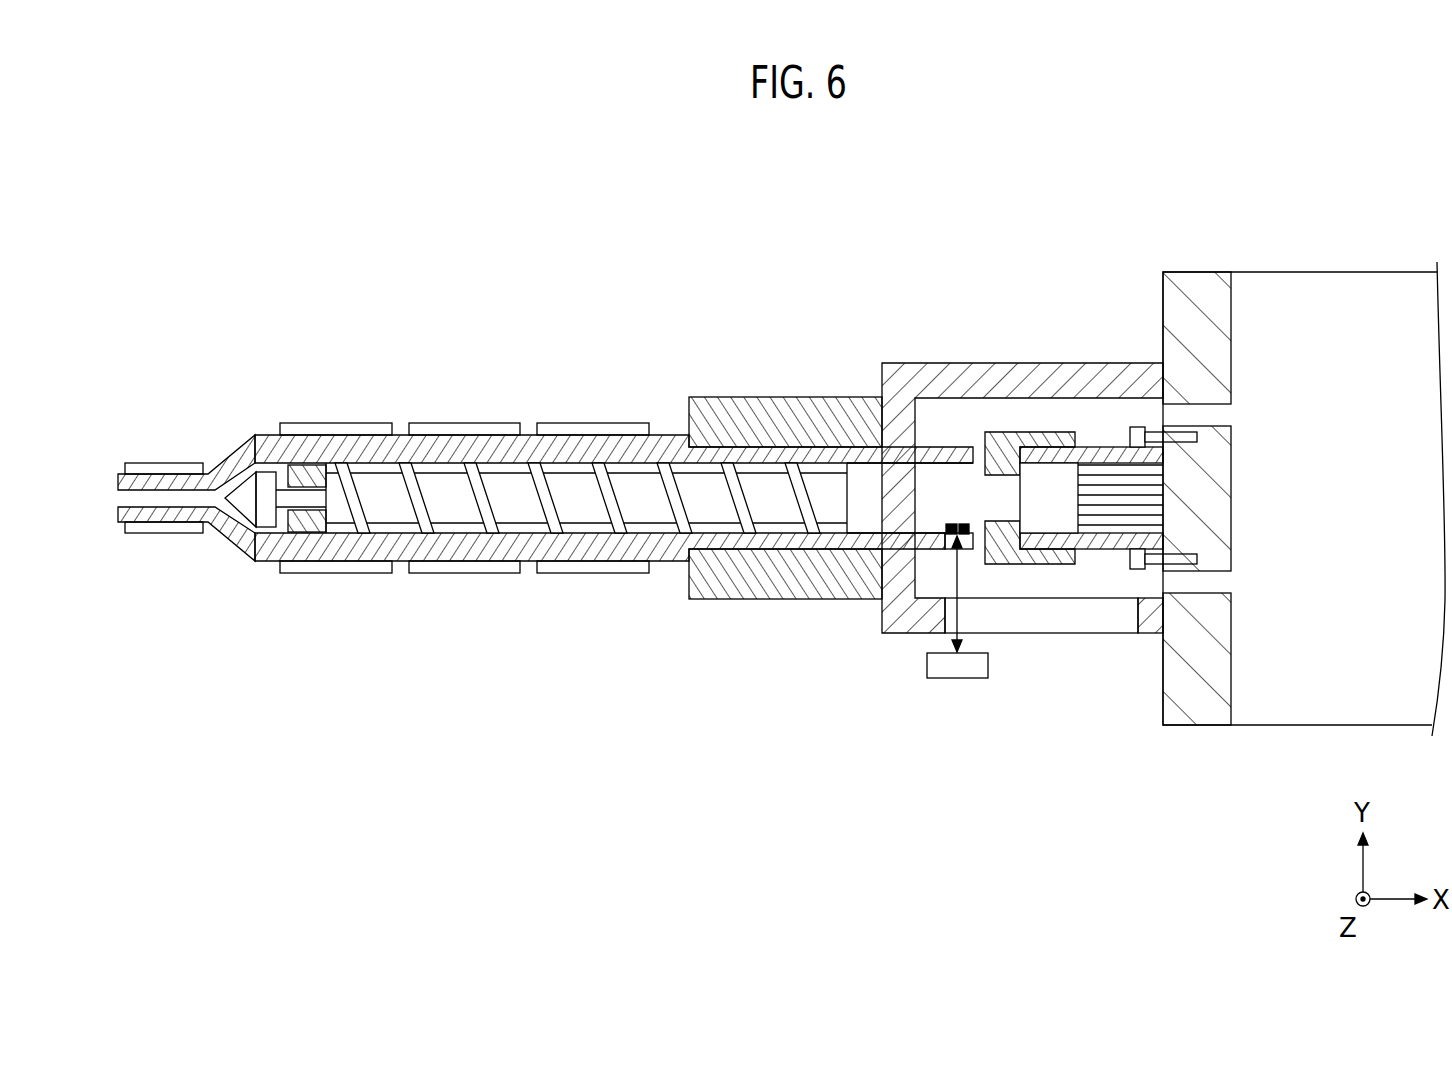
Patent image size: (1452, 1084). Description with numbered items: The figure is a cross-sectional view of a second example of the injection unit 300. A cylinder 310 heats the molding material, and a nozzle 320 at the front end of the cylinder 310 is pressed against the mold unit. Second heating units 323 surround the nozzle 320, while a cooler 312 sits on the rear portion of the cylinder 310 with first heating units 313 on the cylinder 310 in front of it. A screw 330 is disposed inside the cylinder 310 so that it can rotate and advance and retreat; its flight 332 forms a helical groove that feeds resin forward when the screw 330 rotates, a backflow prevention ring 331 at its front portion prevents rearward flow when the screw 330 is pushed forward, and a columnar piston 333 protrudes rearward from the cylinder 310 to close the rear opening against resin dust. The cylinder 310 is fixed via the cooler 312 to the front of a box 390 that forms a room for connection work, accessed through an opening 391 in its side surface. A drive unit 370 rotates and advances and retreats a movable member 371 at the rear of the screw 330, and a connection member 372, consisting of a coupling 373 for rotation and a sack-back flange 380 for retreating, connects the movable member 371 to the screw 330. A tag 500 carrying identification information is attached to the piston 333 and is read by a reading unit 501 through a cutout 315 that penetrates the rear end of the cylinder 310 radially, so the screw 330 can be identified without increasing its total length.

The injection unit 300 is at (232, 292).
The cylinder 310 is at (364, 447).
The cooler 312 is at (748, 410).
The first heating units 313 is at (370, 568).
The cutout 315 is at (967, 545).
The nozzle 320 is at (167, 478).
The second heating units 323 is at (166, 530).
The screw 330 is at (586, 445).
The backflow prevention ring 331 is at (303, 523).
The flight 332 is at (530, 468).
The piston 333 is at (868, 473).
The drive unit 370 is at (1304, 470).
The movable member 371 is at (1218, 497).
The connection member 372 is at (1091, 409).
The coupling 373 is at (1098, 448).
The sack-back flange 380 is at (1036, 432).
The box 390 is at (897, 620).
The opening 391 is at (1042, 620).
The tag 500 is at (957, 520).
The reading unit 501 is at (957, 668).